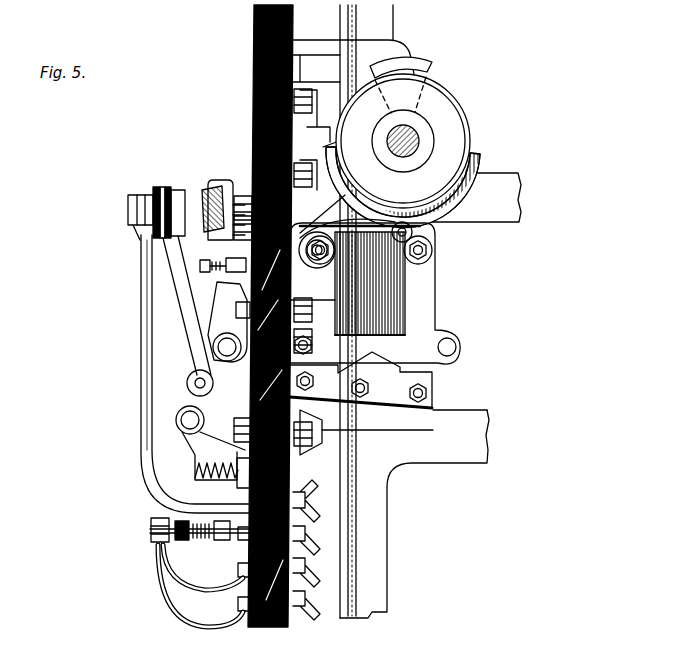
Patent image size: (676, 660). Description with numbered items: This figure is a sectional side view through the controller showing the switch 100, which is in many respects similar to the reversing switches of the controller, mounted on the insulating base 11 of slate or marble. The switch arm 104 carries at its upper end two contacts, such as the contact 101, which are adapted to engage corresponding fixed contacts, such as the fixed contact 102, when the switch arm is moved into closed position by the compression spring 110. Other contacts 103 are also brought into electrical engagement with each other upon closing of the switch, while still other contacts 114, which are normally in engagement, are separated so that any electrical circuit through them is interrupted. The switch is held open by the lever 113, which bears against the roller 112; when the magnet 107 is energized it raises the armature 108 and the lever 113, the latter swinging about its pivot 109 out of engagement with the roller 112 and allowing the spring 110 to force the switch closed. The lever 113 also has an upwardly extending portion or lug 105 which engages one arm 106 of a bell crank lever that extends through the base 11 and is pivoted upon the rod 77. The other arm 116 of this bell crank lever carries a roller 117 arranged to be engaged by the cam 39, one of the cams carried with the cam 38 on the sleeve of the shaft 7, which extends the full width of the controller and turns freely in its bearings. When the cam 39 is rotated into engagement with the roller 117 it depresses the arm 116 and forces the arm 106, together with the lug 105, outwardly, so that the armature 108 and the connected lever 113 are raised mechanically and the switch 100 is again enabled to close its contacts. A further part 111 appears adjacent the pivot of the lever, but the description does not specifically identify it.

The insulating base 11 is at (254, 80).
The shaft 7 is at (418, 128).
The cam 39 is at (426, 70).
The cam 38 is at (478, 153).
The rod 77 is at (322, 228).
The arm of bell crank lever 116 is at (368, 226).
The roller 117 is at (450, 212).
The arm of bell crank lever 106 is at (297, 263).
The magnet 107 is at (392, 268).
The armature 108 is at (392, 391).
The switch 100 is at (153, 185).
The contacts 101 is at (183, 188).
The fixed contacts 102 is at (203, 195).
The contacts 103 is at (199, 270).
The upwardly extending portion 105 is at (226, 306).
The pivot 109 is at (216, 343).
The switch arm 104 is at (178, 363).
The roller 112 is at (193, 387).
The lever 113 is at (176, 425).
The pivot 111 is at (182, 421).
The compression spring 110 is at (207, 481).
The contacts 114 is at (203, 544).